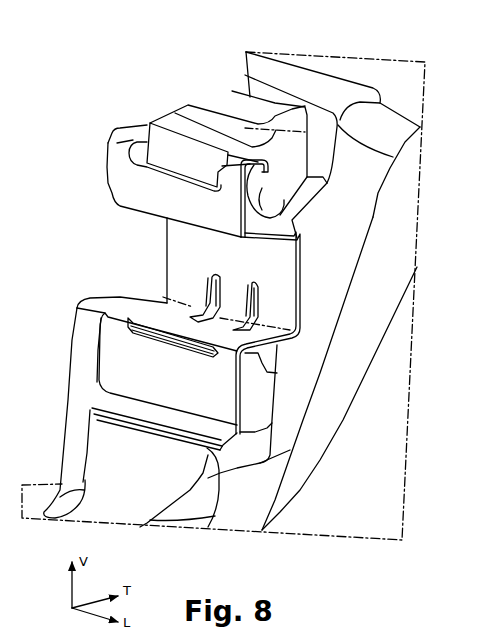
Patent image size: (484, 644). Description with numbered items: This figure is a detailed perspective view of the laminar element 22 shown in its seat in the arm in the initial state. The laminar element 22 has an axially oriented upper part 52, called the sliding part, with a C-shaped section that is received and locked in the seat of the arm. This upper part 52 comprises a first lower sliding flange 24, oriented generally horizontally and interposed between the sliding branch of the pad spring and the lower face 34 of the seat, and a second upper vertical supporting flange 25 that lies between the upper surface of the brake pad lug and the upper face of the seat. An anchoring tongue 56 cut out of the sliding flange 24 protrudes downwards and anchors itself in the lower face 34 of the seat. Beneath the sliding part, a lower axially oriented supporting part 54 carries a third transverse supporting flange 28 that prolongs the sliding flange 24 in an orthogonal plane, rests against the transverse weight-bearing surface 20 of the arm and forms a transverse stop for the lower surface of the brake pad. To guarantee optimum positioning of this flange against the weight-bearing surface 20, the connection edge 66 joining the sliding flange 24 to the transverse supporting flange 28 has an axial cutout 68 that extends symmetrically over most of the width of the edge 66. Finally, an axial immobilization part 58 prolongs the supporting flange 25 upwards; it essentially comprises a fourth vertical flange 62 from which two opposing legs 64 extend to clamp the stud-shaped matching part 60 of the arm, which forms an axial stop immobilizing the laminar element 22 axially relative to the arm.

The axial weight-bearing surface 20 is at (282, 402).
The laminar element 22 is at (210, 245).
The first lower sliding flange 24 is at (167, 317).
The second upper vertical supporting flange 25 is at (277, 247).
The third transverse supporting flange 28 is at (142, 363).
The lower face 34 is at (268, 362).
The upper part 52 is at (308, 276).
The lower axially oriented supporting part 54 is at (187, 393).
The anchoring tongue 56 is at (223, 323).
The axial immobilization part 58 is at (153, 197).
The matching part 60 is at (177, 150).
The fourth vertical flange 62 is at (152, 182).
The legs 64 is at (254, 165).
The edge 66 is at (115, 317).
The axial cutout 68 is at (142, 330).